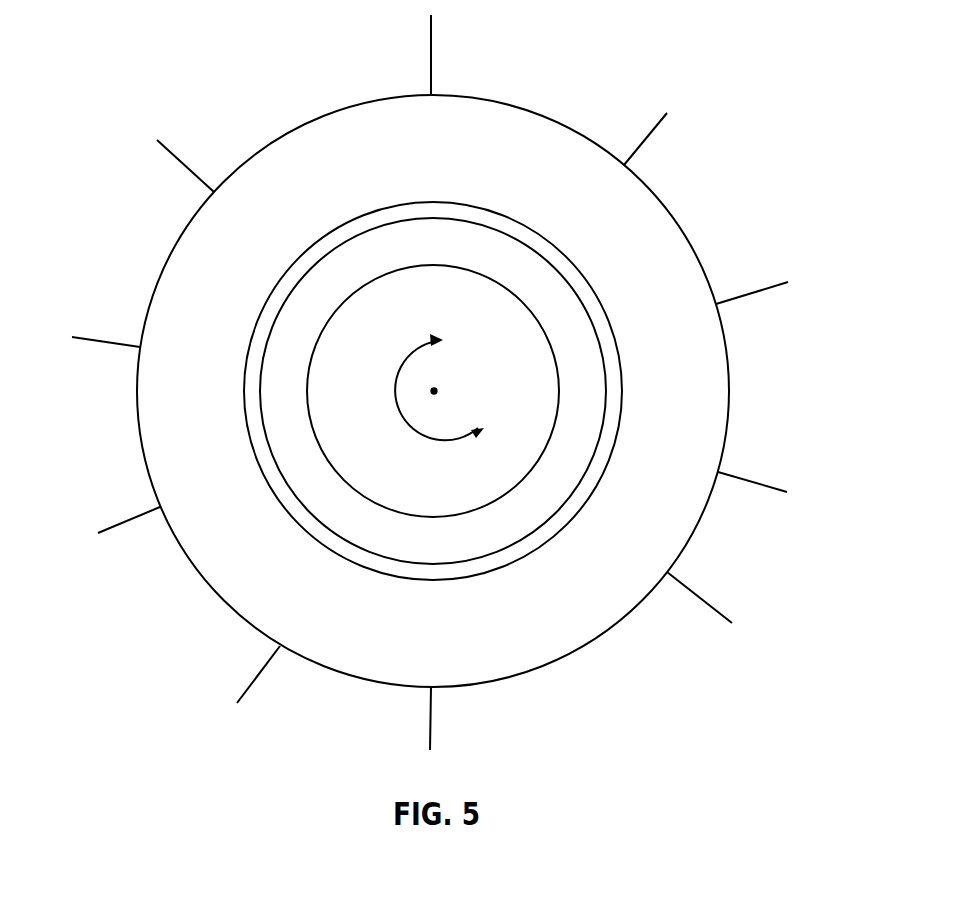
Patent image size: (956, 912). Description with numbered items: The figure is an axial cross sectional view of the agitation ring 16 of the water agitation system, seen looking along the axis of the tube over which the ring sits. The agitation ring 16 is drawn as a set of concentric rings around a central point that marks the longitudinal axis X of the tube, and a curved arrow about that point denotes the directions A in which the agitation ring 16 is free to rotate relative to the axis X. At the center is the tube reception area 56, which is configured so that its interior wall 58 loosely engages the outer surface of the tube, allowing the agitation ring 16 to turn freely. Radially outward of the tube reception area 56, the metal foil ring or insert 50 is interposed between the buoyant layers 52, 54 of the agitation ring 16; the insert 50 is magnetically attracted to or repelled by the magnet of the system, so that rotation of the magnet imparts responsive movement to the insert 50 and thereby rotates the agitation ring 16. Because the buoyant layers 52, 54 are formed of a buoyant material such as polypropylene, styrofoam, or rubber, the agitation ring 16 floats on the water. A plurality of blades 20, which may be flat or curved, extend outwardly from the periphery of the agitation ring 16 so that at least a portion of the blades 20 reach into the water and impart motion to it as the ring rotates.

The agitation ring 16 is at (688, 222).
The blades 20 is at (169, 153).
The metal foil ring (insert) 50 is at (612, 305).
The buoyant layer 52 is at (566, 170).
The buoyant layer 54 is at (582, 405).
The tube reception area 56 is at (432, 300).
The interior wall 58 is at (330, 332).
The longitudinal axis X is at (436, 389).
The directions of rotation A is at (392, 408).